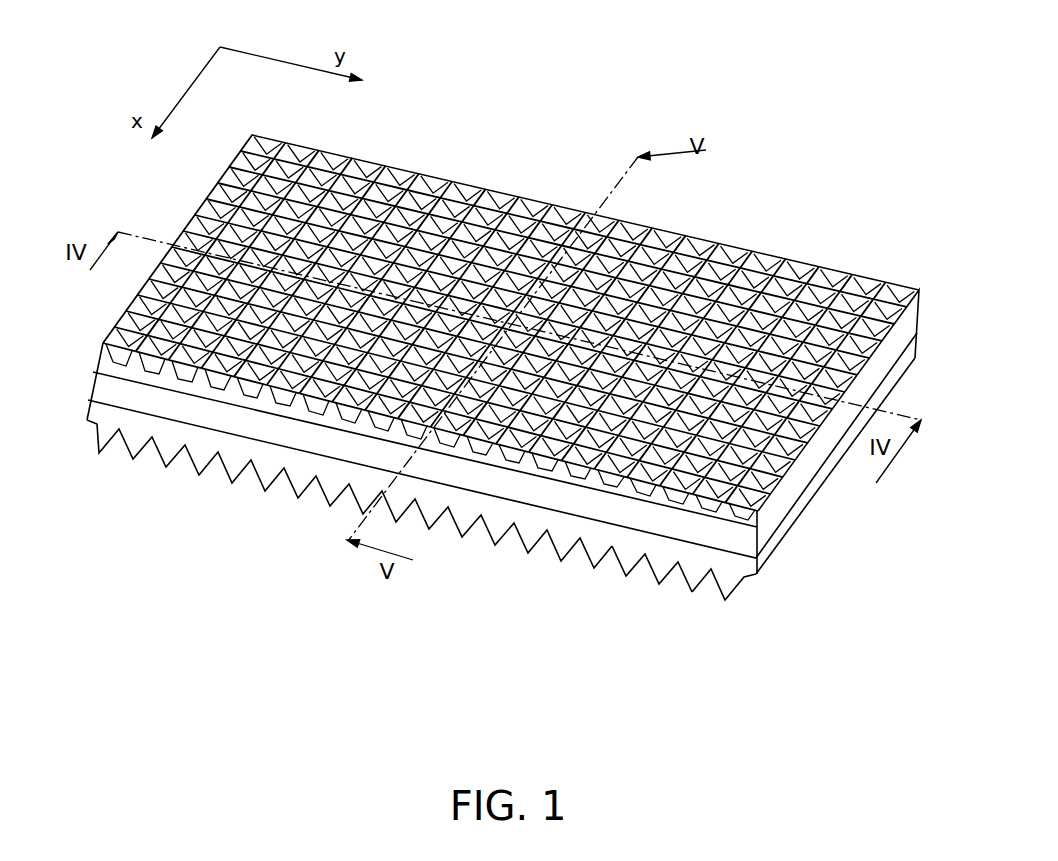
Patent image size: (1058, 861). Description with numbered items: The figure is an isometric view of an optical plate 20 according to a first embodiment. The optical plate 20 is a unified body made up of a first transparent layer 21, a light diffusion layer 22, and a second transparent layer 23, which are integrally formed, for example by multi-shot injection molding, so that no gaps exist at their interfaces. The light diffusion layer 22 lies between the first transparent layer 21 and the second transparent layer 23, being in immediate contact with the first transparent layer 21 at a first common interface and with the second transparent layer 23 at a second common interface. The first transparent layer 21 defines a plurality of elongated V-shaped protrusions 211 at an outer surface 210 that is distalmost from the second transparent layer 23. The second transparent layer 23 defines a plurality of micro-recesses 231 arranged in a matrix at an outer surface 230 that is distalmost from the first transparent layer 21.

The optical plate 20 is at (503, 342).
The first transparent layer 21 is at (501, 518).
The outer surface 210 is at (465, 549).
The elongated V-shaped protrusions 211 is at (655, 583).
The light diffusion layer 22 is at (768, 525).
The second transparent layer 23 is at (503, 355).
The outer surface 230 is at (767, 250).
The micro-recesses 231 is at (440, 175).